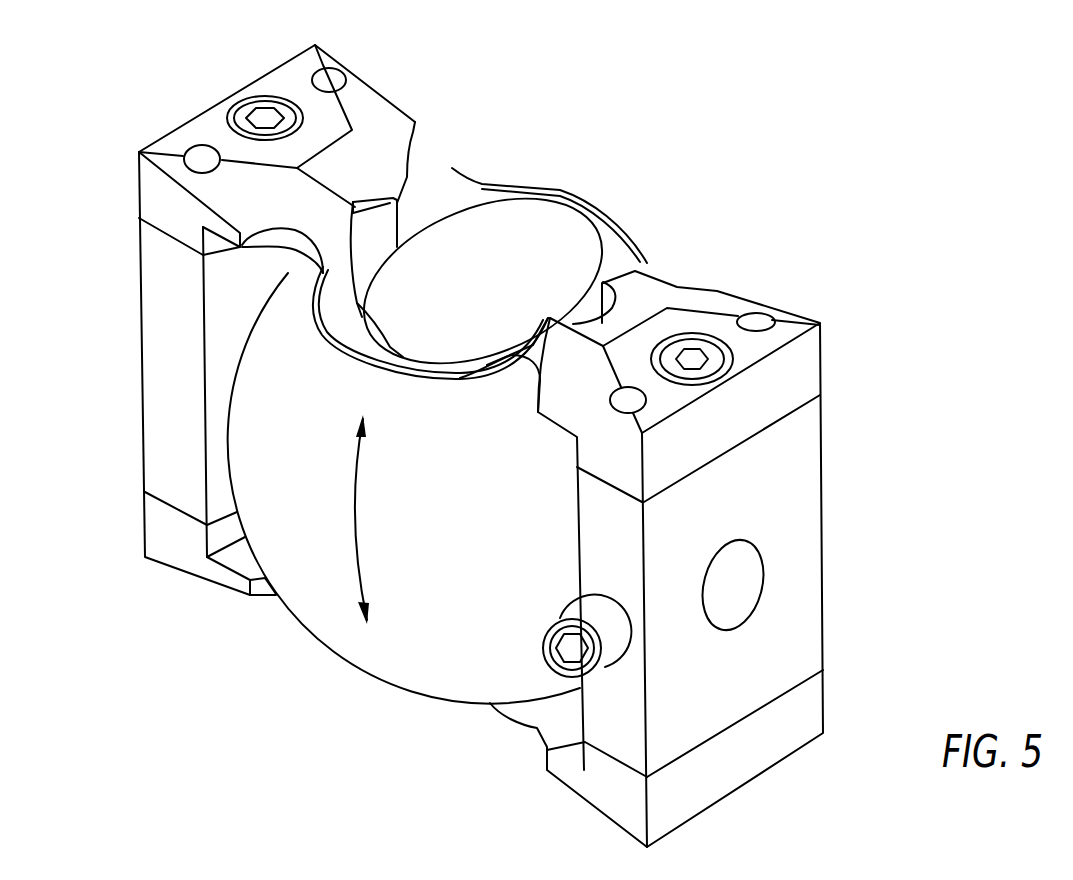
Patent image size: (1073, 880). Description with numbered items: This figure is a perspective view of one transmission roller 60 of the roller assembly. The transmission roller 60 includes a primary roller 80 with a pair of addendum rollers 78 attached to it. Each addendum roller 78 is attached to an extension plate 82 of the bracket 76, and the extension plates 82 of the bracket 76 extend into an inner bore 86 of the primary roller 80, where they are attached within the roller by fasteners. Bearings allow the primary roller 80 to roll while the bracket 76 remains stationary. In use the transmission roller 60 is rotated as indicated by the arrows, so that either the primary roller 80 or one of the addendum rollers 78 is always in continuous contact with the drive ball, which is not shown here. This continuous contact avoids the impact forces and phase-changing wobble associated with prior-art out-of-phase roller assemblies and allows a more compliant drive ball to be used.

The transmission roller 60 is at (297, 689).
The bracket 76 is at (157, 277).
The addendum roller 78 is at (533, 247).
The primary roller 80 is at (420, 677).
The extension plate 82 is at (333, 290).
The inner bore 86 is at (427, 203).